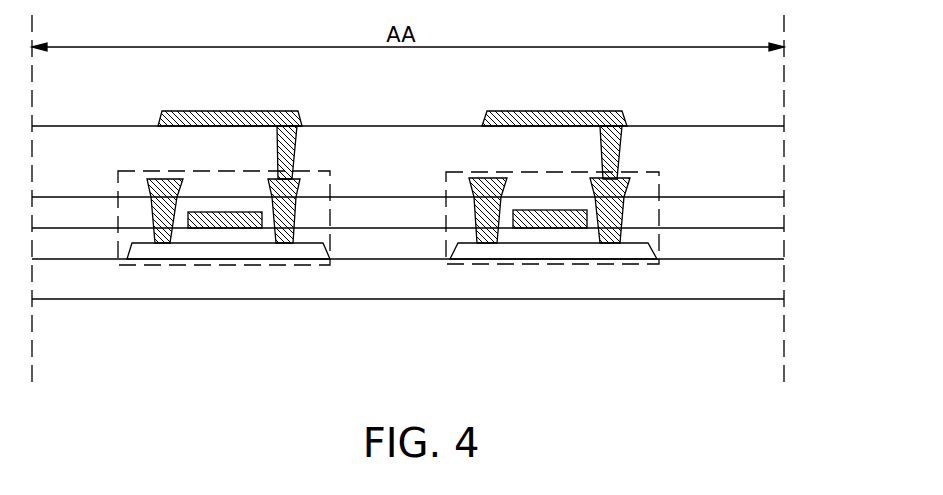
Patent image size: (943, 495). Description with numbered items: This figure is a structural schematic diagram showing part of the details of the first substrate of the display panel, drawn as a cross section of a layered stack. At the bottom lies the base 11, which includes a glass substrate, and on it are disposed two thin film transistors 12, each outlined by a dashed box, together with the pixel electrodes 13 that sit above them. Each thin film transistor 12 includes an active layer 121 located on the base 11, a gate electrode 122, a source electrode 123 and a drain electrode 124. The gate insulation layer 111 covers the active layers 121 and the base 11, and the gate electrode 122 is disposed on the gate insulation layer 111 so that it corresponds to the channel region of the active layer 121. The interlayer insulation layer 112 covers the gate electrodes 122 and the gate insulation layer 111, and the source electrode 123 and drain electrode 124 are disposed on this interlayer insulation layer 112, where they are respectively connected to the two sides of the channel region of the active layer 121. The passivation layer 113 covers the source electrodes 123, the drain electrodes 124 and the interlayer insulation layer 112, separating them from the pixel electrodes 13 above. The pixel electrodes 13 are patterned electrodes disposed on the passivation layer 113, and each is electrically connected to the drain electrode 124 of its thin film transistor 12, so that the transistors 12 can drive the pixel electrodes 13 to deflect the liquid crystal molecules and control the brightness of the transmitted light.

The base 11 is at (732, 278).
The gate insulation layer 111 is at (732, 243).
The interlayer insulation layer 112 is at (732, 211).
The passivation layer 113 is at (732, 176).
The thin film transistor 12 is at (330, 265).
The active layer 121 is at (511, 248).
The gate electrode 122 is at (558, 220).
The source electrode 123 is at (490, 243).
The drain electrode 124 is at (610, 243).
The pixel electrode 13 is at (550, 125).